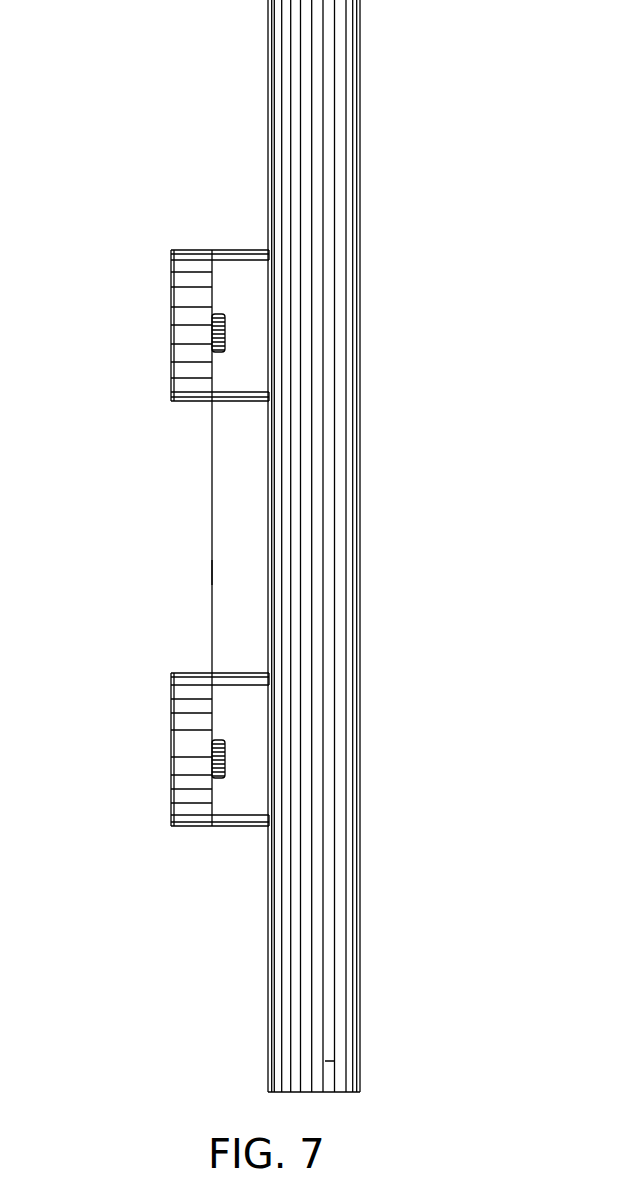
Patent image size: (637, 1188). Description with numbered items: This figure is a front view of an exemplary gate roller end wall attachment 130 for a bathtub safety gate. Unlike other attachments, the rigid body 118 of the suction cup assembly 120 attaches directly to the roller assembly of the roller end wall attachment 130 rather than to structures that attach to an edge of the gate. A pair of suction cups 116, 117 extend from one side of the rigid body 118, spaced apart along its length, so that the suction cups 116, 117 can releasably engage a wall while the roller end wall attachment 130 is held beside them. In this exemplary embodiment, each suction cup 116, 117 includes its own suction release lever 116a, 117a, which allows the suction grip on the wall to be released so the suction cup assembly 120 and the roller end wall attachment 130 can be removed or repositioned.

The suction cup 116 is at (172, 327).
The suction release lever 116a is at (219, 315).
The suction cup 117 is at (172, 757).
The suction release lever 117a is at (217, 777).
The rigid body 118 is at (223, 522).
The suction cup assembly 120 is at (208, 572).
The gate roller end wall attachment 130 is at (365, 660).